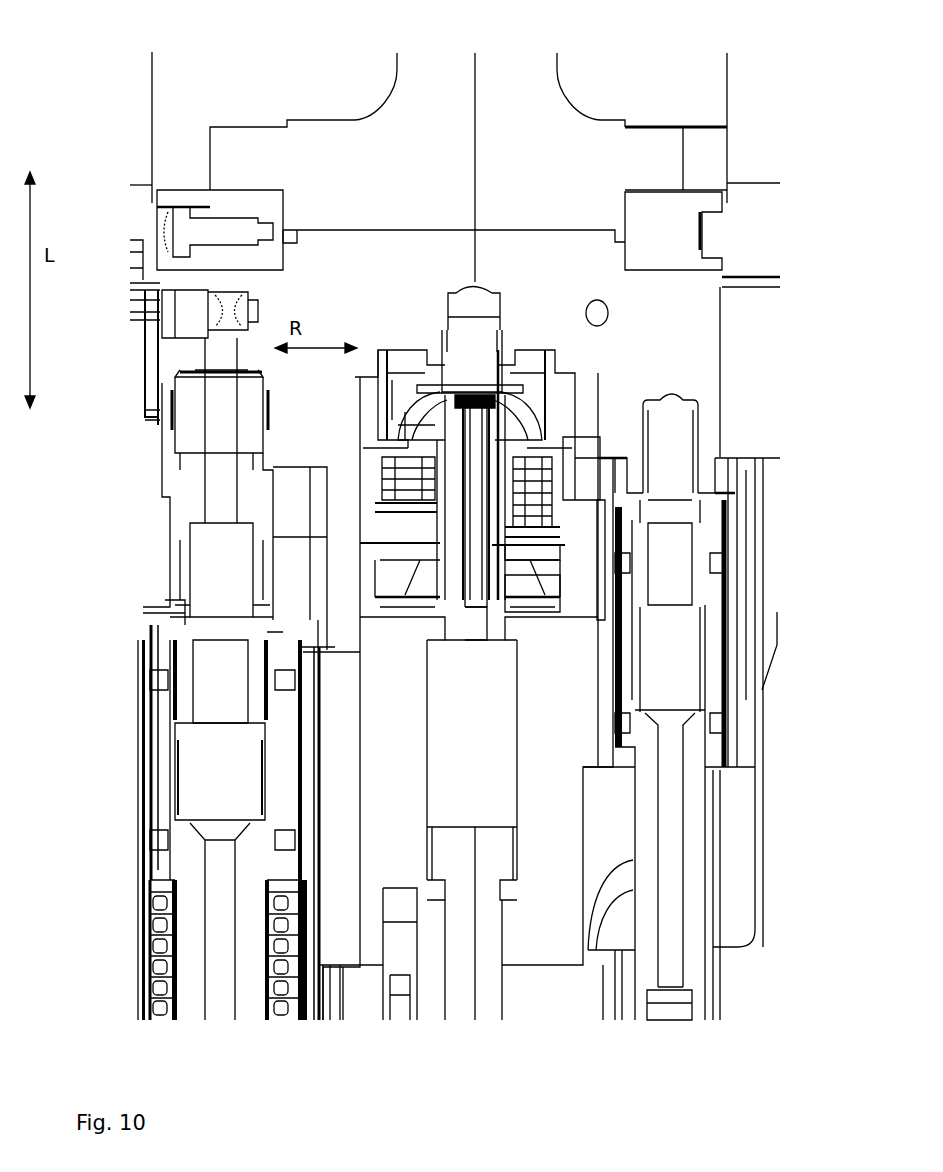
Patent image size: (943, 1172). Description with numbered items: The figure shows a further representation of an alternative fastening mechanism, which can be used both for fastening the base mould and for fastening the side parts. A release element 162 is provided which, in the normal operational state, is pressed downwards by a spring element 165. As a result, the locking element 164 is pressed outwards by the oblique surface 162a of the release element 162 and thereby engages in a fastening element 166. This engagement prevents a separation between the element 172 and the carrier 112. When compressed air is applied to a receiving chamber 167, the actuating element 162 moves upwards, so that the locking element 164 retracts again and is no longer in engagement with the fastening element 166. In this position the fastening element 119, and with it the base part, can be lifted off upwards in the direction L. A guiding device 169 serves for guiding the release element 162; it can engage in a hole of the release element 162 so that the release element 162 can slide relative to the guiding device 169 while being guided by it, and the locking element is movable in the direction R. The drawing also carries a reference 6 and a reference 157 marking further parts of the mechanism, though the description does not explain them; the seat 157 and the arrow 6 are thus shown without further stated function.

The section direction arrow 6 is at (368, 332).
The carrier 112 is at (333, 579).
The fastening element 119 is at (612, 312).
The valve seat 157 is at (543, 605).
The release element 162 is at (498, 458).
The oblique surface 162a is at (505, 402).
The locking element 164 is at (405, 412).
The spring element 165 is at (550, 477).
The fastening element 166 is at (395, 428).
The receiving chamber 167 is at (533, 553).
The guiding device 169 is at (477, 503).
The element 172 is at (320, 296).